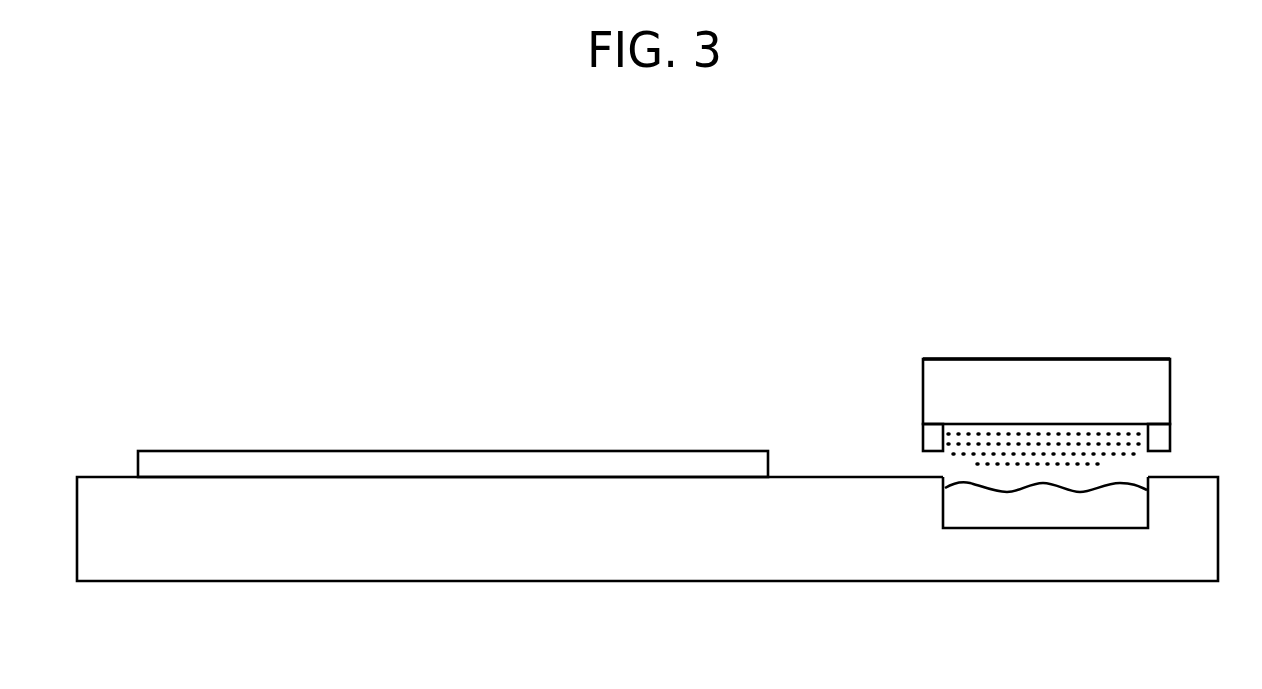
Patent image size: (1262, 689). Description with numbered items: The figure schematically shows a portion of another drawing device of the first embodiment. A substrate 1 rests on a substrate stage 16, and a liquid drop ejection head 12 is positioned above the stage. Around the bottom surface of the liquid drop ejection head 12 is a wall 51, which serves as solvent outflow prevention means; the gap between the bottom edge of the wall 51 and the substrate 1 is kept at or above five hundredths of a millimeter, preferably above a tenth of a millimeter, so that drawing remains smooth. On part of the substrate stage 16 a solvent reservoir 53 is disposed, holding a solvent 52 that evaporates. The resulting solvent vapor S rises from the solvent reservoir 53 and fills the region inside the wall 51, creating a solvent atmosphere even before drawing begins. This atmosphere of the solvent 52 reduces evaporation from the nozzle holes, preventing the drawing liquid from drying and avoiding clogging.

The substrate 1 is at (415, 450).
The liquid drop ejection head 12 is at (1095, 359).
The substrate stage 16 is at (503, 568).
The wall 51 is at (920, 436).
The solvent 52 is at (1006, 515).
The solvent reservoir 53 is at (1147, 508).
The solvent vapor S is at (1103, 457).